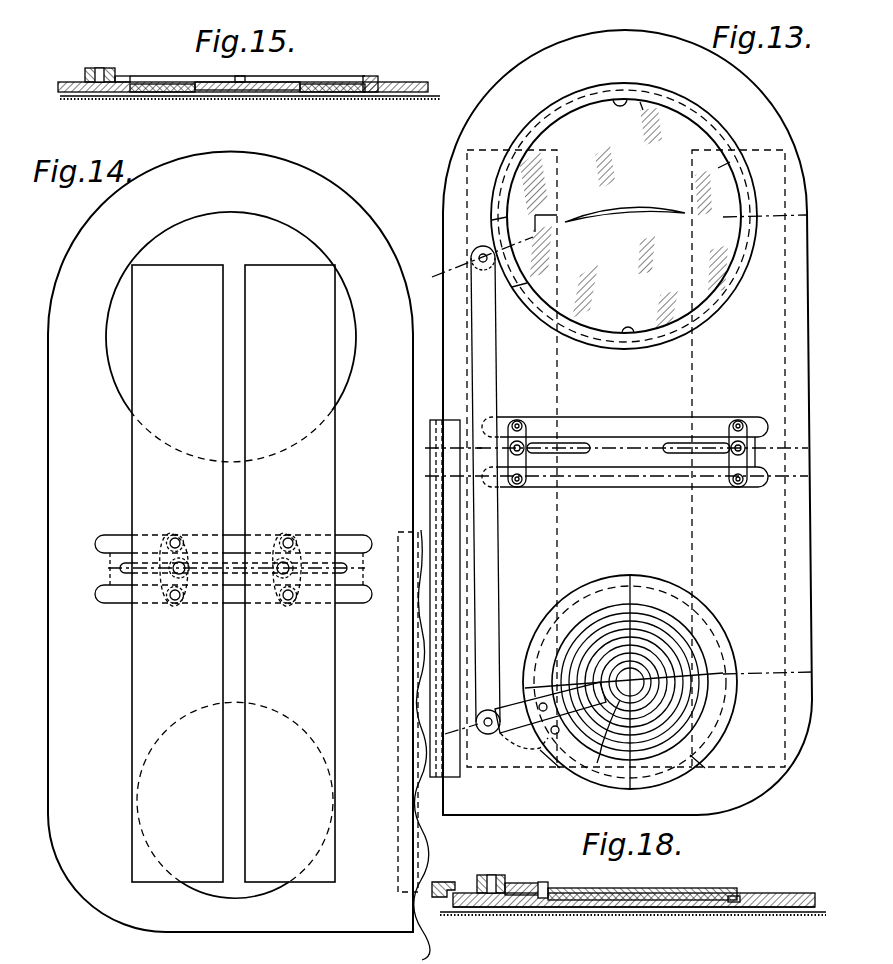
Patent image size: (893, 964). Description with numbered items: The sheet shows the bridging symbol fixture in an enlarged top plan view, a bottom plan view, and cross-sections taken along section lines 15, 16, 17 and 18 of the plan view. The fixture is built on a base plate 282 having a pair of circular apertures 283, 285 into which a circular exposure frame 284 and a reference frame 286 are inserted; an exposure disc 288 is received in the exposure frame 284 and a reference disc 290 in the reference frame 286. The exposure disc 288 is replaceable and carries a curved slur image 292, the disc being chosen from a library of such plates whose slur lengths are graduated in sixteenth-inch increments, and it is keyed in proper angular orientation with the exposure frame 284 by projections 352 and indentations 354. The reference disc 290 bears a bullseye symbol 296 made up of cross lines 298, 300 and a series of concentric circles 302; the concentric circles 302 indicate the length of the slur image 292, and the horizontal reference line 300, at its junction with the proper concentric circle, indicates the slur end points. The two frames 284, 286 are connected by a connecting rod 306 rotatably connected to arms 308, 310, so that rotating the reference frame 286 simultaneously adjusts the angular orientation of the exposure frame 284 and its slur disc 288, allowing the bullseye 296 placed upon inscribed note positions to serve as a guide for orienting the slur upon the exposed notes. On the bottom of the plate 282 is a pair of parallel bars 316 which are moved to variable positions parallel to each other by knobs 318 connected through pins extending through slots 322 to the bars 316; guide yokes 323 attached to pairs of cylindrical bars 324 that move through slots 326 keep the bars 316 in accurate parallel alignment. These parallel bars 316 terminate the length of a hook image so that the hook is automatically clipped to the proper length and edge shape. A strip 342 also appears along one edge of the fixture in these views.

In FIG. 15, the base plate 282 is at (420, 76).
In FIG. 14, the base plate 282 is at (83, 883).
In FIG. 13, the base plate 282 is at (757, 778).
In FIG. 18, the base plate 282 is at (478, 910).
In FIG. 14, the circular aperture 283 is at (269, 216).
In FIG. 15, the exposure frame 284 is at (373, 76).
In FIG. 13, the exposure frame 284 is at (695, 106).
In FIG. 14, the circular aperture 285 is at (248, 896).
In FIG. 13, the circular aperture 285 is at (675, 765).
In FIG. 18, the circular aperture 285 is at (752, 912).
In FIG. 13, the reference frame 286 is at (699, 624).
In FIG. 13, the exposure disc 288 is at (656, 100).
In FIG. 13, the reference disc 290 is at (680, 592).
In FIG. 18, the reference disc 290 is at (705, 888).
In FIG. 15, the slur image 292 is at (268, 90).
In FIG. 13, the slur image 292 is at (635, 210).
In FIG. 13, the bullseye symbol 296 is at (610, 700).
In FIG. 13, the cross line 298 is at (642, 578).
In FIG. 13, the horizontal reference line 300 is at (718, 669).
In FIG. 13, the concentric circles 302 is at (705, 704).
In FIG. 15, the connecting rod 306 is at (114, 69).
In FIG. 13, the connecting rod 306 is at (488, 550).
In FIG. 18, the connecting rod 306 is at (497, 875).
In FIG. 15, the arm 308 is at (122, 76).
In FIG. 13, the arm 308 is at (490, 244).
In FIG. 13, the arm 310 is at (518, 730).
In FIG. 18, the arm 310 is at (522, 883).
In FIG. 14, the parallel bars 316 is at (145, 860).
In FIG. 13, the parallel bars 316 is at (484, 150).
In FIG. 18, the parallel bars 316 is at (545, 910).
In FIG. 13, the knob 318 is at (523, 454).
In FIG. 14, the slot 322 is at (120, 537).
In FIG. 13, the slot 322 is at (655, 414).
In FIG. 14, the guide yoke 323 is at (170, 600).
In FIG. 13, the guide yoke 323 is at (526, 435).
In FIG. 13, the cylindrical bar 324 is at (517, 421).
In FIG. 14, the slot 326 is at (122, 568).
In FIG. 13, the slot 326 is at (585, 444).
In FIG. 13, the strip 342 is at (436, 420).
In FIG. 18, the strip 342 is at (443, 882).
In FIG. 15, the projection 352 is at (250, 76).
In FIG. 13, the projection 352 is at (615, 98).
In FIG. 13, the indentation 354 is at (619, 106).
In FIG. 13, the section line 15- 15 is at (819, 190).
In FIG. 13, the section line 16- 16 is at (820, 428).
In FIG. 13, the section line 17- 17 is at (820, 465).
In FIG. 13, the section line 18- 18 is at (821, 652).